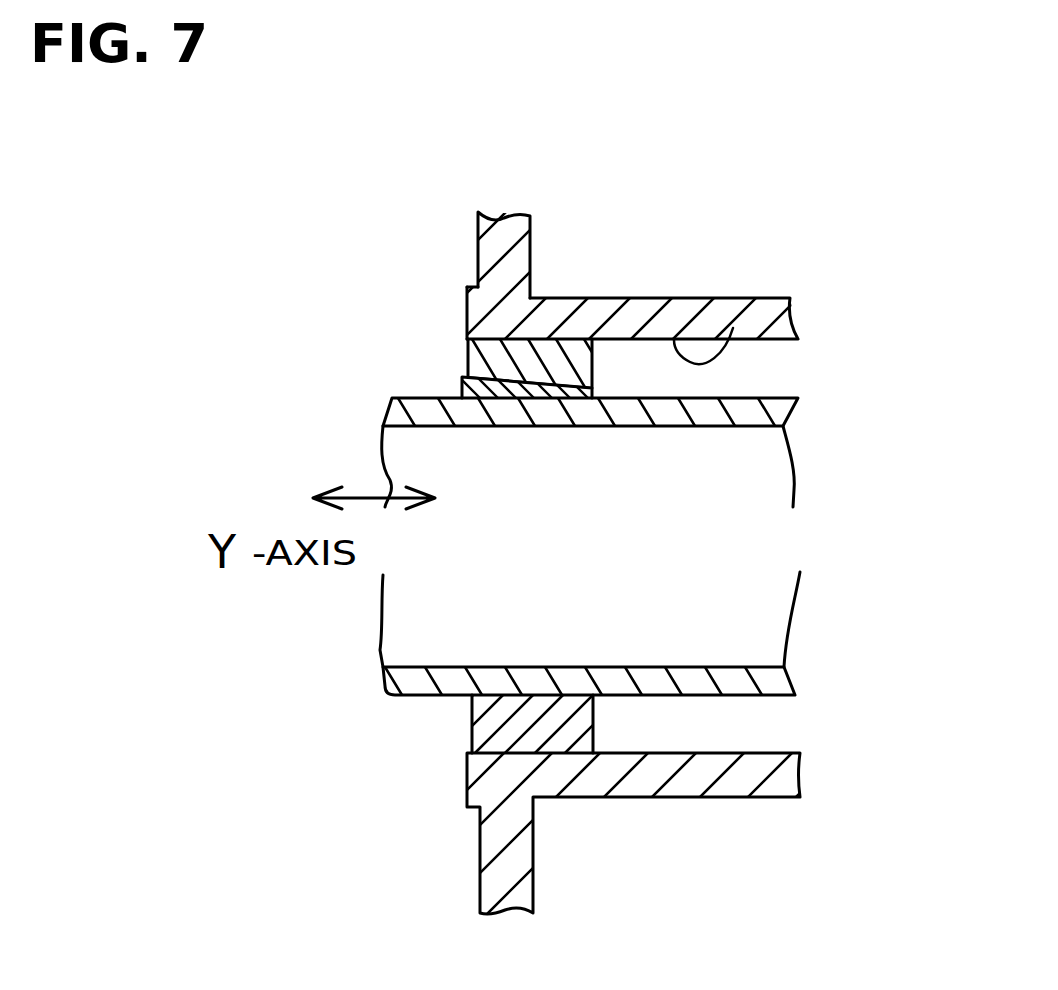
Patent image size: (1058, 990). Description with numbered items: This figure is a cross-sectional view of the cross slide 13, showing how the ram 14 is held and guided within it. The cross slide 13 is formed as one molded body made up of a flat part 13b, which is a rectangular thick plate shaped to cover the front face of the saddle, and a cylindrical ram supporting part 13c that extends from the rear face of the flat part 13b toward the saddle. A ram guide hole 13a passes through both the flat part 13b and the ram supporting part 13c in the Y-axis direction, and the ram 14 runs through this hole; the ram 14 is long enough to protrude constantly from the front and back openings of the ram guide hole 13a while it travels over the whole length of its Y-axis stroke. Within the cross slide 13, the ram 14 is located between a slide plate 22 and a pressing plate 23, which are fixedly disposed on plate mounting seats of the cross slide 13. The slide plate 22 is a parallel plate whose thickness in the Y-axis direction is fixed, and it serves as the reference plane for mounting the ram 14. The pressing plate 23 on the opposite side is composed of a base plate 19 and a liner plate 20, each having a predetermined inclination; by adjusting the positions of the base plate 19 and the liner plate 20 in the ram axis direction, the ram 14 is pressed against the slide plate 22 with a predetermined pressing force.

The cross slide 13 is at (655, 244).
The ram guide hole 13a is at (733, 328).
The flat part 13b is at (532, 237).
The ram supporting part 13c is at (610, 298).
The ram 14 is at (768, 397).
The base plate 19 is at (463, 384).
The liner plate 20 is at (468, 352).
The slide plate 22 is at (470, 722).
The pressing plate 23 is at (428, 323).